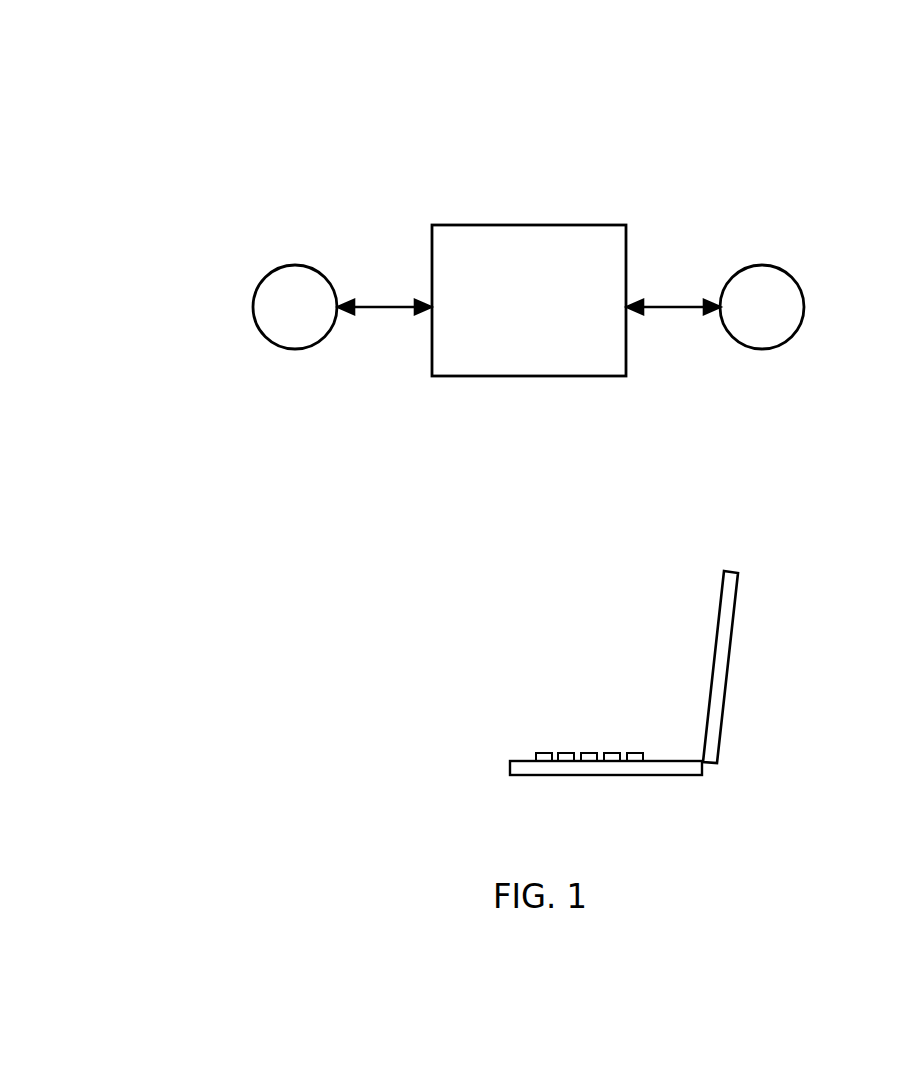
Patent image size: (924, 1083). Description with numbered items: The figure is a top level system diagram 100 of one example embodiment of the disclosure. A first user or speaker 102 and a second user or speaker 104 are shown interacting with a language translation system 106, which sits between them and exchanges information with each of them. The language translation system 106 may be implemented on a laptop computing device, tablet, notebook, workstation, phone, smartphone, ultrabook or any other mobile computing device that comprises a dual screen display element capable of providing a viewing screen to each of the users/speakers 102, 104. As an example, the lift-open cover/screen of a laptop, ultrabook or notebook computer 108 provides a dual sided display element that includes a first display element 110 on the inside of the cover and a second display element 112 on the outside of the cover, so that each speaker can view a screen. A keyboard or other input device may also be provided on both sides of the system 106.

The top level system diagram 100 is at (528, 40).
The first user or speaker 102 is at (267, 271).
The second user or speaker 104 is at (795, 279).
The language translation system 106 is at (513, 342).
The laptop, ultrabook or notebook computer 108 is at (510, 768).
The first display element 110 is at (711, 665).
The second display element 112 is at (731, 652).